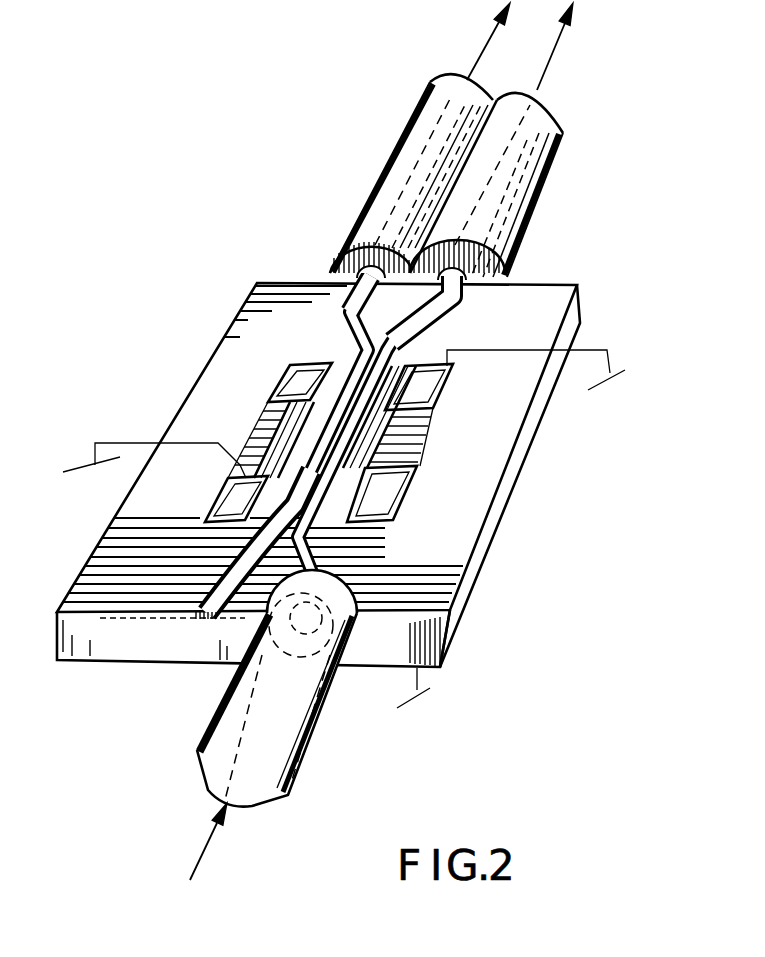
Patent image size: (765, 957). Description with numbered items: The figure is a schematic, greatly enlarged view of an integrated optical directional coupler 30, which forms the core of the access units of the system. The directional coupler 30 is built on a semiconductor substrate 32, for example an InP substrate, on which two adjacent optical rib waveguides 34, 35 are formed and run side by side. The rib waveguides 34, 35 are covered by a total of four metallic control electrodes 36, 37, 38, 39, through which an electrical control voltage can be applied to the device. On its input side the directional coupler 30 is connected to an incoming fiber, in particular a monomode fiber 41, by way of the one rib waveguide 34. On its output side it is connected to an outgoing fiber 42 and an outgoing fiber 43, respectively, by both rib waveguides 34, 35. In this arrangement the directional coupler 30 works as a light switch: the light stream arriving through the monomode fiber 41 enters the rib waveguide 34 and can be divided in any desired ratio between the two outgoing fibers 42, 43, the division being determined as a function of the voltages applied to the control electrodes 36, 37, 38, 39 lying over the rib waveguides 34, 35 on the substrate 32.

The integrated optical directional coupler 30 is at (92, 648).
The semiconductor substrate 32 is at (455, 612).
The rib waveguide 34 is at (462, 322).
The rib waveguide 35 is at (347, 320).
The metallic control electrode 36 is at (425, 398).
The metallic control electrode 37 is at (375, 492).
The metallic control electrode 38 is at (228, 478).
The metallic control electrode 39 is at (288, 377).
The monomode fiber 41 is at (278, 752).
The outgoing fiber 42 is at (520, 208).
The outgoing fiber 43 is at (378, 190).